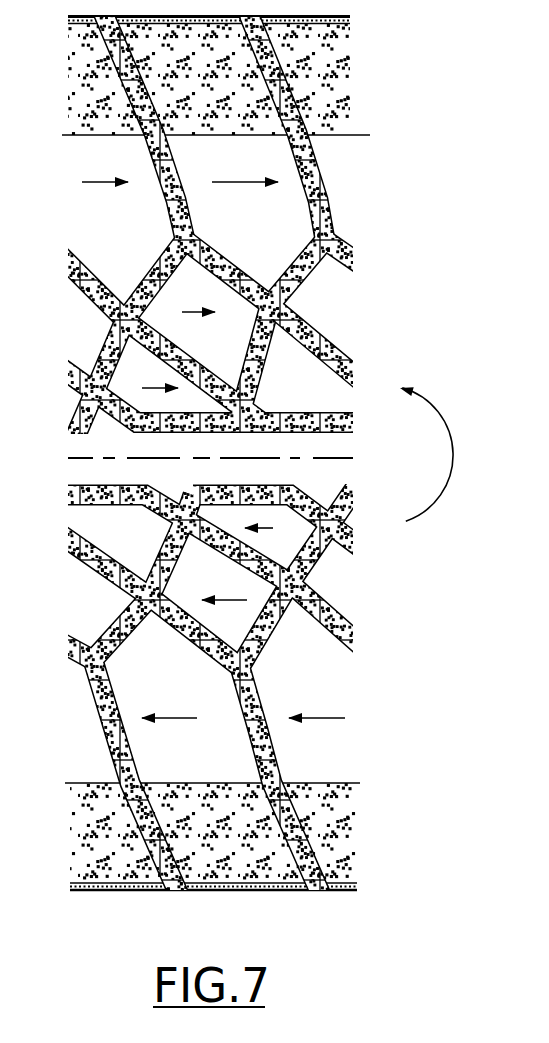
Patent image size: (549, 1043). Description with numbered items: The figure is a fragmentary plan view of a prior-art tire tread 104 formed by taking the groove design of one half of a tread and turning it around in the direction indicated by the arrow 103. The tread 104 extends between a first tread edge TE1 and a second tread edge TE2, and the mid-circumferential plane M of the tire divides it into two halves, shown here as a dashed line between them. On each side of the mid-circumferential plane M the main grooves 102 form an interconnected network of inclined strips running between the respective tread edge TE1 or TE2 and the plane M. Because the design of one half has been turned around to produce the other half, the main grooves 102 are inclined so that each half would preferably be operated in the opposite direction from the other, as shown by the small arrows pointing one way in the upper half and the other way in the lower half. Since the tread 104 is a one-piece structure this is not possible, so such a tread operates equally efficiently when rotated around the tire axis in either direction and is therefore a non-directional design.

The main grooves 102 is at (265, 452).
The arrow 103 is at (443, 497).
The tread 104 is at (393, 219).
The mid-circumferential plane M is at (347, 458).
The tread edge TE1 is at (337, 787).
The tread edge TE2 is at (342, 133).